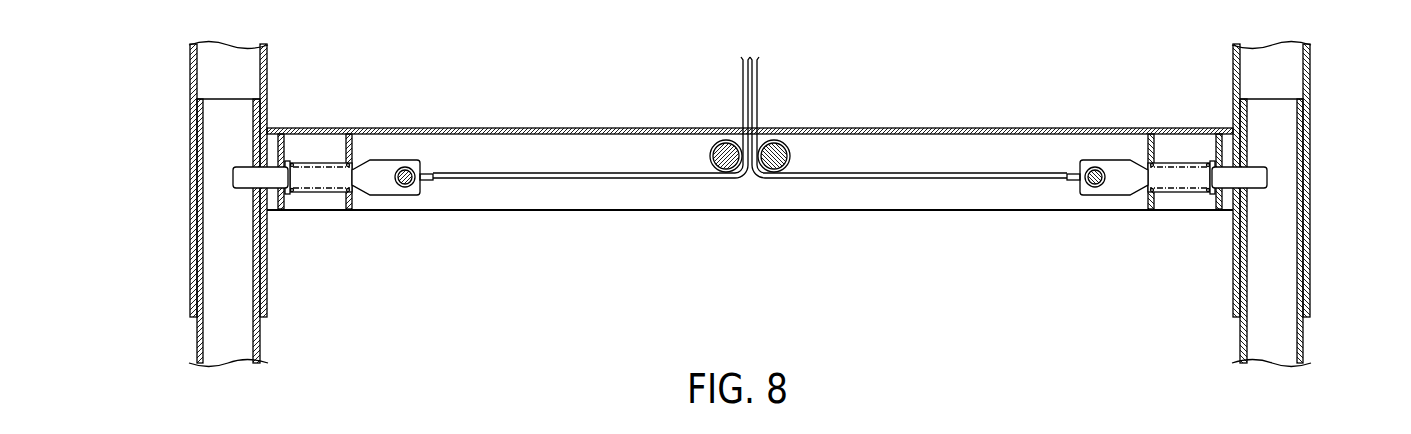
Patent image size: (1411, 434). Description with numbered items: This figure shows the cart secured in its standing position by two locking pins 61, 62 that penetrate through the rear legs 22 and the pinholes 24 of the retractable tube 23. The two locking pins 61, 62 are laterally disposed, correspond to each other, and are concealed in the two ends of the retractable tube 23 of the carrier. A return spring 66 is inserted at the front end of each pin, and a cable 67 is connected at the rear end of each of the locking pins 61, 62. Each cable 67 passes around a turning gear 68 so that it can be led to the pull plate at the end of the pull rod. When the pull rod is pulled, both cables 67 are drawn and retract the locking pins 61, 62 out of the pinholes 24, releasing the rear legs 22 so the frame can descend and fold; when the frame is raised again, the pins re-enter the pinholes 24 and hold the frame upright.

The rear leg 22 is at (260, 333).
The retractable tube 23 is at (190, 78).
The pinhole 24 is at (253, 190).
The locking pin 61 is at (374, 170).
The locking pin 62 is at (1127, 168).
The return spring 66 is at (347, 160).
The cable 67 is at (590, 175).
The turning gear 68 is at (720, 140).